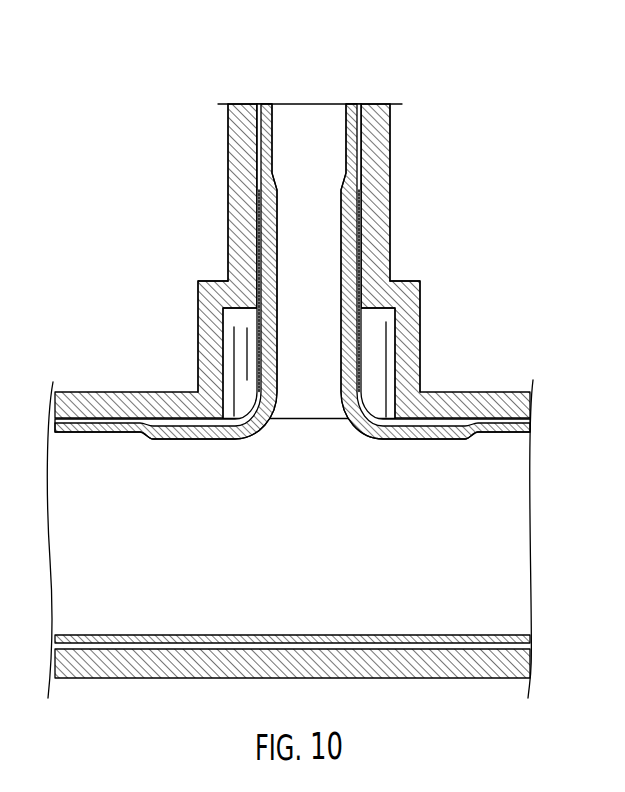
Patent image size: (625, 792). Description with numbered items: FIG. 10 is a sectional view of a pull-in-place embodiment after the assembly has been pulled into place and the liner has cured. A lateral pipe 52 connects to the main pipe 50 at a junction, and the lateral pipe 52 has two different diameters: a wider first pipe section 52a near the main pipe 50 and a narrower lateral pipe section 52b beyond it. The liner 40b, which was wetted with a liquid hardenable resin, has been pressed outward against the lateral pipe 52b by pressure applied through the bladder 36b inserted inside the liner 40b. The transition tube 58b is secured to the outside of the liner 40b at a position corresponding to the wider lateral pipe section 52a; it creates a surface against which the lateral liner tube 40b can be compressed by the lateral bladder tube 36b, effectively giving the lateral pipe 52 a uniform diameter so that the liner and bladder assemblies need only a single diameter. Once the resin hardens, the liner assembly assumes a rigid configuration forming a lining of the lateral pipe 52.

The main pipe 50 is at (500, 393).
The lateral pipe 52 is at (292, 261).
The wider lateral pipe section 52a is at (198, 383).
The lateral pipe section 52b is at (227, 225).
The bladder 36b is at (350, 140).
The liner 40b is at (362, 104).
The transition tube 58b is at (373, 400).